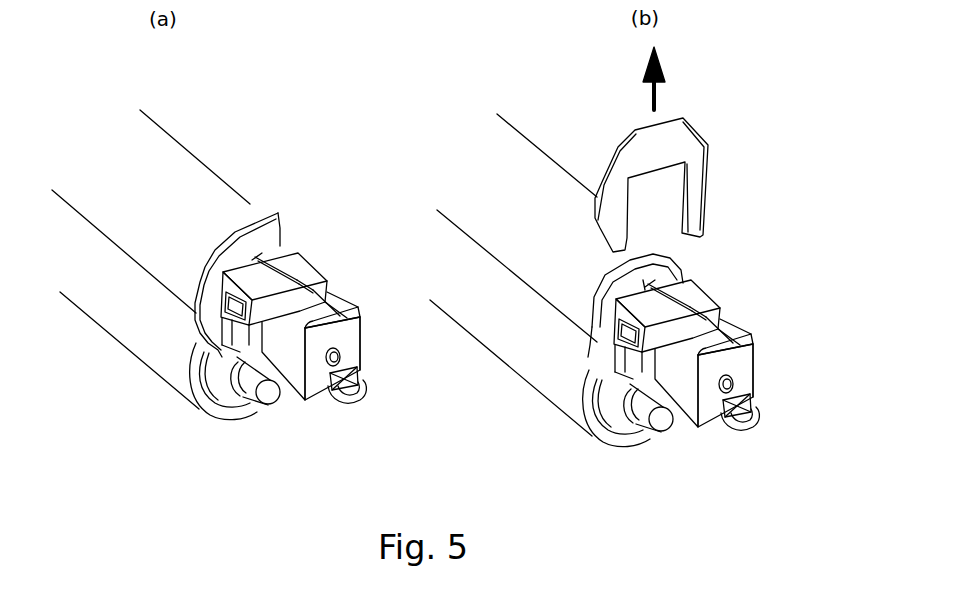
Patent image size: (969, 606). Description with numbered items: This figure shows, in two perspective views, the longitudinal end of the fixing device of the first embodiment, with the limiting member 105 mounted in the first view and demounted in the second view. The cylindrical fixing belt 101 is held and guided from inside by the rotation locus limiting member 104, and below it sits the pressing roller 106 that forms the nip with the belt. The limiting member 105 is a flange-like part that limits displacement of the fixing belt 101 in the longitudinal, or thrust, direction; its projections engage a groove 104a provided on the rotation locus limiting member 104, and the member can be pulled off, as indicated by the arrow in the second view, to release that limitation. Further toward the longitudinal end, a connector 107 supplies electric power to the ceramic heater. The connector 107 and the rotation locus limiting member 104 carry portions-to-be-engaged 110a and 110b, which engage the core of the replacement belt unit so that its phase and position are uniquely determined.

The fixing belt 101 is at (185, 178).
The rotation locus limiting member 104 is at (298, 265).
The groove 104a is at (670, 285).
The limiting member 105 is at (275, 233).
The pressing roller 106 is at (135, 317).
The connector 107 is at (348, 304).
The portion-to-be-engaged 110a is at (333, 353).
The portion-to-be-engaged 110b is at (333, 327).